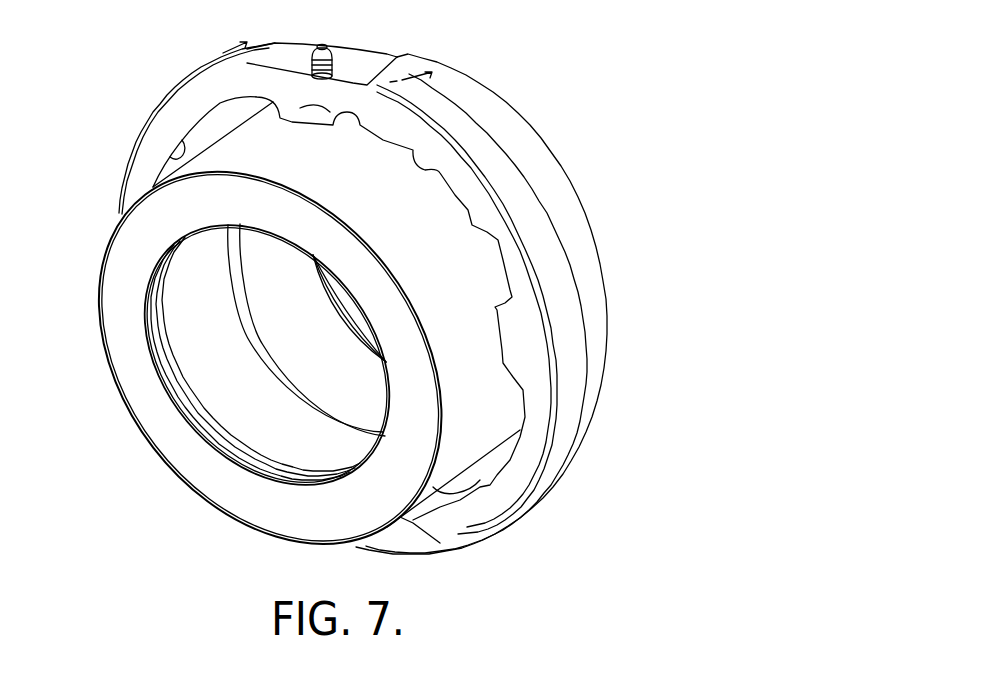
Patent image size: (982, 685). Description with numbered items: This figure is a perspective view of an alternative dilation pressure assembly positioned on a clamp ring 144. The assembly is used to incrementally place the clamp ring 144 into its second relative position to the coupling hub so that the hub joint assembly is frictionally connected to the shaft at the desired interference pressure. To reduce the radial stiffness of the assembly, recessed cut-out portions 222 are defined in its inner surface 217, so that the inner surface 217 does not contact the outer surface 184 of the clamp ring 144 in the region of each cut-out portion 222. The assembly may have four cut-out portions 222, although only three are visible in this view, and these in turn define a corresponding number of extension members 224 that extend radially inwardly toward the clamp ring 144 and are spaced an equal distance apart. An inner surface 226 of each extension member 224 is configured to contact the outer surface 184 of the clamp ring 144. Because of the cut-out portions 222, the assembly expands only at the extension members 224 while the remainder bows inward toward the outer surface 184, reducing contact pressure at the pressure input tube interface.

The clamp ring 144 is at (107, 262).
The outer surface 184 is at (228, 150).
The inner surface 217 is at (437, 168).
The cut-out portion 222 is at (182, 140).
The extension member 224 is at (300, 108).
The inner surface 226 is at (306, 126).